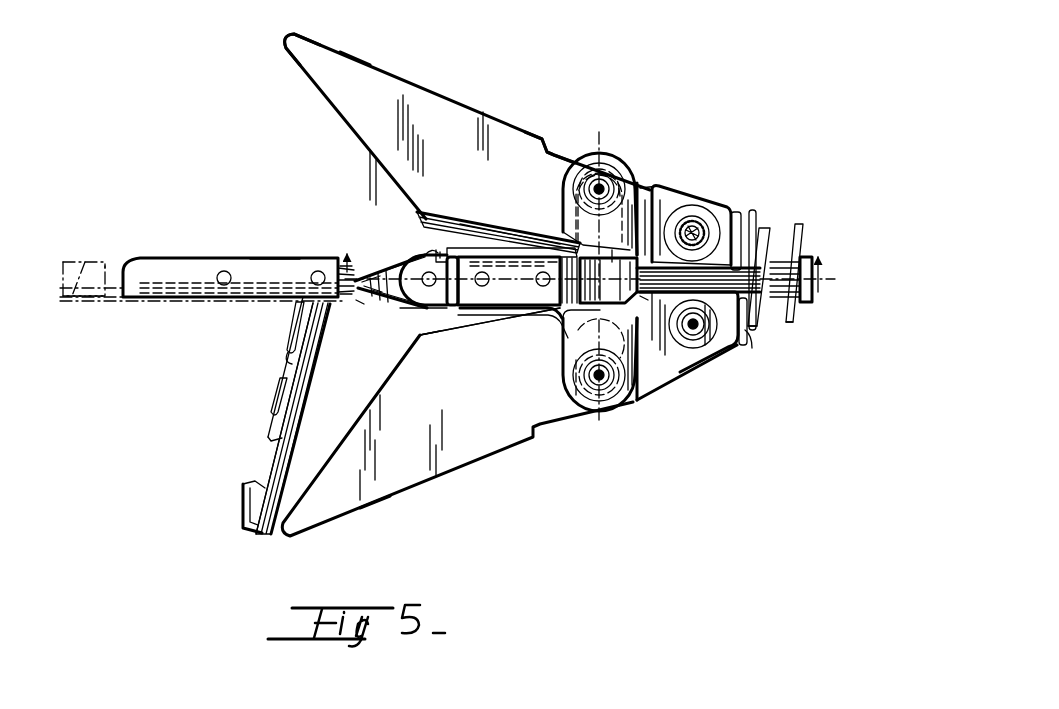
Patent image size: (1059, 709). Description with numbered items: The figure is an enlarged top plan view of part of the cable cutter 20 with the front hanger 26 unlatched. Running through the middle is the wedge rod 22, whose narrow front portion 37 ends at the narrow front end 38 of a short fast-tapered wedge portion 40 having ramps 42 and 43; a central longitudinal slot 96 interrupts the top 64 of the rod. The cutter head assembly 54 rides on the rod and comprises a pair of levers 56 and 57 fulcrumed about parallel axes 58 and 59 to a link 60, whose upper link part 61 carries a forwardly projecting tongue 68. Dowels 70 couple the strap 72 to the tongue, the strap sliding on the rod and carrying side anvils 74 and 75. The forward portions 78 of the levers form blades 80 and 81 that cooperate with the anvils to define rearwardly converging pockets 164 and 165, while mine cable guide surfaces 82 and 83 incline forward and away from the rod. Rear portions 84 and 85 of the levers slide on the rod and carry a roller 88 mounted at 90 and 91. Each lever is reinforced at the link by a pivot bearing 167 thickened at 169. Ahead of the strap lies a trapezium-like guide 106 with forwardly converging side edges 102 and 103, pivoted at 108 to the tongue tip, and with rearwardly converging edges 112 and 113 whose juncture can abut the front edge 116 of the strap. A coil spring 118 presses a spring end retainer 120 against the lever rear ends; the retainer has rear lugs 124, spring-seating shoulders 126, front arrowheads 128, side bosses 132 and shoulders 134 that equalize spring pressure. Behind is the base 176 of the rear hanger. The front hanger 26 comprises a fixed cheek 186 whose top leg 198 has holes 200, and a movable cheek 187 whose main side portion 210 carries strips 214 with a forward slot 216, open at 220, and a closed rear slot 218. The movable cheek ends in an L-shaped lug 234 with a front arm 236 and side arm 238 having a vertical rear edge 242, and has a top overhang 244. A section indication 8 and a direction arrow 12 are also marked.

The section line 8 is at (584, 263).
The section line 12 is at (622, 140).
The cable cutter 20 is at (656, 183).
The wedge rod 22 is at (359, 302).
The front hanger 26 is at (182, 256).
The narrow front portion 37 is at (345, 296).
The narrow front end 38 is at (764, 325).
The fast-tapered wedge portion 40 is at (806, 303).
The ramp 42 is at (790, 250).
The ramp 43 is at (790, 324).
The cutter head assembly 54 is at (419, 84).
The lever 56 is at (504, 120).
The lever 57 is at (468, 467).
The fulcrum axis 58 is at (604, 184).
The fulcrum axis 59 is at (604, 395).
The link 60 is at (560, 188).
The upper link part 61 is at (561, 360).
The top of the rod 64 is at (370, 274).
The tongue 68 is at (493, 317).
The dowels 70 is at (538, 279).
The strap 72 is at (452, 306).
The anvil 74 is at (495, 247).
The anvil 75 is at (522, 317).
The forward portions of the levers 78 is at (355, 57).
The blade 80 is at (478, 237).
The blade 81 is at (448, 331).
The mine cable guide surface 82 is at (298, 64).
The mine cable guide surface 83 is at (348, 436).
The rear portions of lever 56 84 is at (673, 192).
The rear portions of lever 57 85 is at (718, 350).
The roller 88 is at (690, 210).
The roller mounting 90 is at (686, 228).
The roller mounting 91 is at (688, 330).
The central longitudinal slot 96 is at (335, 263).
The side edge of guide 102 is at (396, 258).
The side edge of guide 103 is at (398, 304).
The guide 106 is at (379, 263).
The pivot 108 is at (421, 278).
The rear side edge of guide 112 is at (433, 251).
The rear side edge of guide 113 is at (430, 310).
The front edge of strap 116 is at (444, 258).
The coil spring 118 is at (797, 224).
The spring end retainer 120 is at (756, 210).
The rear lugs 124 is at (764, 230).
The spring-seating shoulders 126 is at (751, 346).
The arrowheads 128 is at (714, 290).
The side bosses 132 is at (735, 212).
The shoulders 134 is at (697, 214).
The pocket 164 is at (441, 236).
The pocket 165 is at (417, 338).
The pivot bearing 167 is at (637, 174).
The thickened portion 169 is at (574, 212).
The base 176 is at (270, 257).
The fixed cheek 186 is at (230, 256).
The movable cheek 187 is at (115, 307).
The top leg 198 is at (174, 296).
The holes 200 is at (316, 277).
The main side portion 210 is at (317, 357).
The strips 214 is at (266, 429).
The forward slot 216 is at (272, 397).
The rear slot 218 is at (292, 331).
The opening 220 is at (285, 361).
The L-shaped lug 234 is at (66, 260).
The front arm 236 is at (85, 262).
The side arm 238 is at (98, 262).
The vertical rear edge 242 is at (107, 262).
The overhang 244 is at (291, 468).